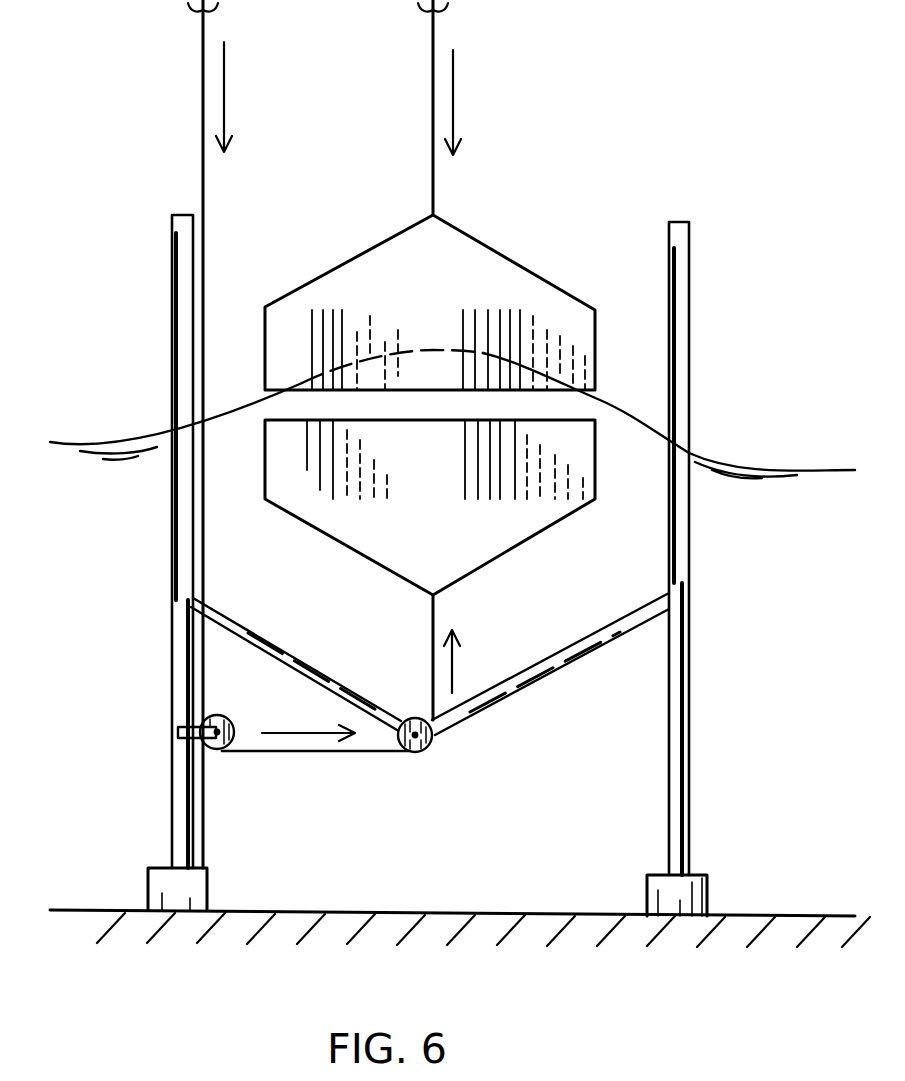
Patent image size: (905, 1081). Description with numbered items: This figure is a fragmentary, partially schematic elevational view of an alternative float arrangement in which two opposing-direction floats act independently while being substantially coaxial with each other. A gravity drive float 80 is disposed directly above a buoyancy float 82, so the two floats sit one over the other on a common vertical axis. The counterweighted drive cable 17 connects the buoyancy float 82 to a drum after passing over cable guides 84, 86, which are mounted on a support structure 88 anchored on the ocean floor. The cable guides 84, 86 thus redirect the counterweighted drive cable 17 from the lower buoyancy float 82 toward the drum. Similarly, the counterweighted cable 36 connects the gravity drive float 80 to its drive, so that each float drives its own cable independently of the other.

The counterweighted drive cable 17 is at (203, 262).
The counterweighted cable 36 is at (433, 82).
The gravity drive float 80 is at (595, 358).
The buoyancy float 82 is at (595, 455).
The cable guide 84 is at (428, 751).
The cable guide 86 is at (208, 750).
The support structure 88 is at (708, 697).